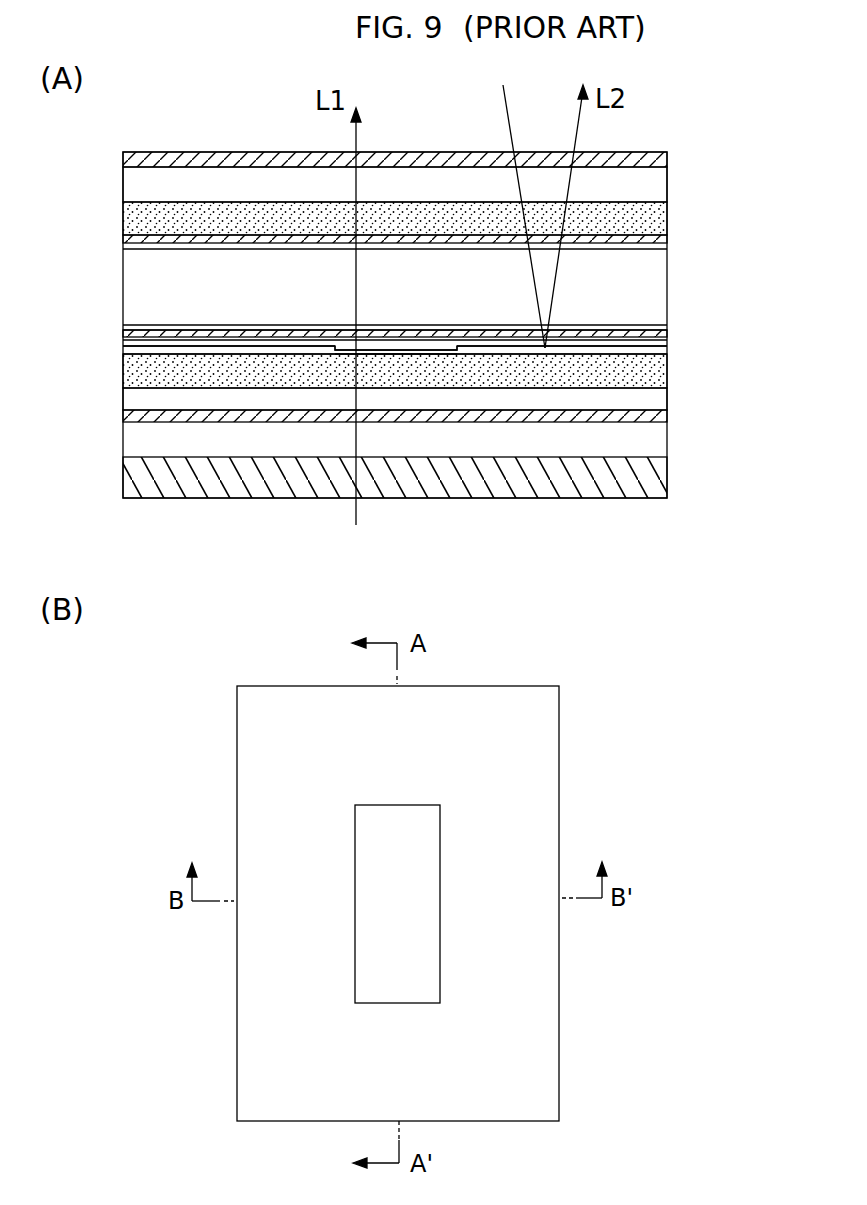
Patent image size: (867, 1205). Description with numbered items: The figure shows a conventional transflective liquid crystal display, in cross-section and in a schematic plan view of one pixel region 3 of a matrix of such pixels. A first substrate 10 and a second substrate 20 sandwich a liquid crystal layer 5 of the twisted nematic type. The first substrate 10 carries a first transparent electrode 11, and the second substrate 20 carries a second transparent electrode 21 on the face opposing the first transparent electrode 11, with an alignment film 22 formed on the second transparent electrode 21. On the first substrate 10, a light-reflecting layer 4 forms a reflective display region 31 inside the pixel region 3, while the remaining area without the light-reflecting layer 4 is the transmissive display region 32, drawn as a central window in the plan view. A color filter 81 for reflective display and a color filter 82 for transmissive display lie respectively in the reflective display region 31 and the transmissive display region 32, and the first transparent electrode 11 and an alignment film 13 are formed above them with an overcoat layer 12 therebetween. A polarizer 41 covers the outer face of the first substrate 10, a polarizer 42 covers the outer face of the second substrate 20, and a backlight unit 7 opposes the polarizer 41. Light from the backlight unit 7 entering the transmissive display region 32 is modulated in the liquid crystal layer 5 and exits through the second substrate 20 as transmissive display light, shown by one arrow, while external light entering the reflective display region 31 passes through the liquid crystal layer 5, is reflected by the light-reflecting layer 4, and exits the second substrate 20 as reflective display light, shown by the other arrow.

The polarizer 42 is at (667, 157).
The second substrate 20 is at (667, 205).
The second transparent electrode 21 is at (667, 238).
The alignment film 22 is at (667, 245).
The liquid crystal layer 5 is at (660, 280).
The alignment film 13 is at (667, 318).
The first transparent electrode 11 is at (667, 333).
The overcoat layer 12 is at (667, 343).
The color filter for reflective display 81 is at (667, 350).
The color filter for transmissive display 82 is at (425, 350).
The light-reflecting layer 4 is at (667, 365).
The first substrate 10 is at (667, 383).
The polarizer 41 is at (667, 420).
The backlight unit 7 is at (667, 478).
The pixel region 3 is at (570, 698).
The transmissive display region 32 is at (397, 904).
The reflective display region 31 is at (398, 903).